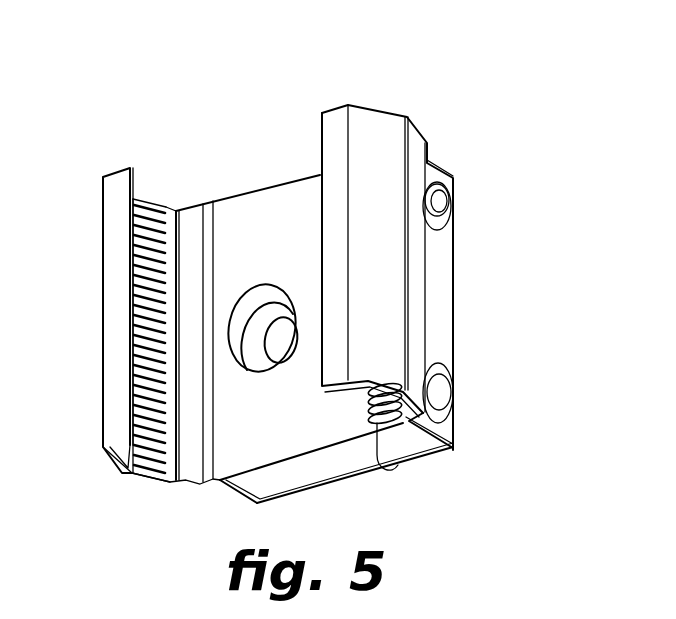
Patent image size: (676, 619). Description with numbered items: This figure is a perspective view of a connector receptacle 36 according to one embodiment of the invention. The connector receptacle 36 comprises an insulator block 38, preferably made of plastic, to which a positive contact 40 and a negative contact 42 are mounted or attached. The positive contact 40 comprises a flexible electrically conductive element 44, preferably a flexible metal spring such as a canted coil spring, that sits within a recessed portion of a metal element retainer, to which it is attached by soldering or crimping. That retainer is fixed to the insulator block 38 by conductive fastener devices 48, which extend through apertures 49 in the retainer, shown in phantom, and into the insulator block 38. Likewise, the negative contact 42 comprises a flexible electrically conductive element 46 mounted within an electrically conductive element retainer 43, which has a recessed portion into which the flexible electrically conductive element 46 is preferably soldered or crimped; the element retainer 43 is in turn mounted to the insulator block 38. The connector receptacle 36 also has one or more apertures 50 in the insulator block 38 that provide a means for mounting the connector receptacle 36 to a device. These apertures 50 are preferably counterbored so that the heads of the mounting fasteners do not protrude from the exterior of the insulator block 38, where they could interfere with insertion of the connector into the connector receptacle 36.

The connector receptacle 36 is at (246, 115).
The insulator block 38 is at (237, 215).
The positive contact 40 is at (370, 132).
The negative contact 42 is at (112, 212).
The electrically conductive element retainer 43 is at (145, 492).
The flexible electrically conductive element 44 is at (398, 465).
The flexible electrically conductive element 46 is at (138, 215).
The conductive fastener devices 48 is at (453, 202).
The apertures 49 is at (452, 377).
The apertures 50 is at (248, 372).